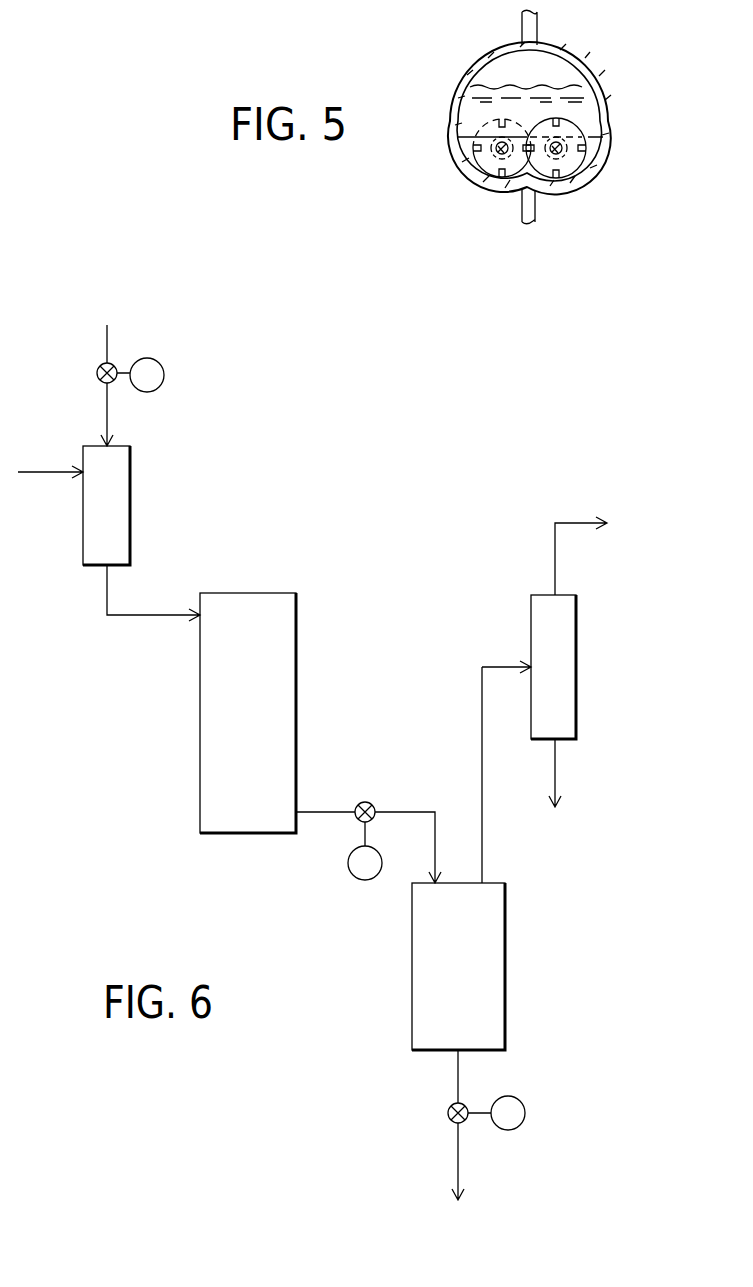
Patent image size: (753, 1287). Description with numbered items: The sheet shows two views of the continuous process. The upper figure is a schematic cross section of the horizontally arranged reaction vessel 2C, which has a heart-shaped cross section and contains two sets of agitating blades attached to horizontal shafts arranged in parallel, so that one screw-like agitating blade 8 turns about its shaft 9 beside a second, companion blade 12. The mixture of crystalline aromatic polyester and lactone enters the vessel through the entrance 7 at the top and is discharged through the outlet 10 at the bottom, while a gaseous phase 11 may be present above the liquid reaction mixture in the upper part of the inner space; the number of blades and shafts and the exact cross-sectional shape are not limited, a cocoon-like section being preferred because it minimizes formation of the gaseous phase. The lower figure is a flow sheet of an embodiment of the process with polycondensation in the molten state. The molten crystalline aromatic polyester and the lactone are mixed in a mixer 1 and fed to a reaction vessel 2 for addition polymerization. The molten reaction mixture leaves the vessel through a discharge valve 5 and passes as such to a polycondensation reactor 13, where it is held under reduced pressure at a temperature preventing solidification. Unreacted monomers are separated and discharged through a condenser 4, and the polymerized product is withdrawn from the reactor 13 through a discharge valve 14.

In FIG. 5, the reaction vessel 2C is at (603, 108).
In FIG. 5, the entrance 7 is at (528, 32).
In FIG. 5, the screw 8 is at (580, 163).
In FIG. 5, the screw shaft 9 is at (560, 147).
In FIG. 5, the outlet 10 is at (533, 207).
In FIG. 5, the gaseous phase 11 is at (492, 78).
In FIG. 5, the screw 12 is at (468, 123).
In FIG. 6, the mixer 1 is at (120, 517).
In FIG. 6, the reaction vessel 2 is at (288, 690).
In FIG. 6, the condenser 4 is at (567, 692).
In FIG. 6, the discharge valve 5 is at (364, 802).
In FIG. 6, the polycondensation reactor 13 is at (497, 993).
In FIG. 6, the discharge valve 14 is at (448, 1115).